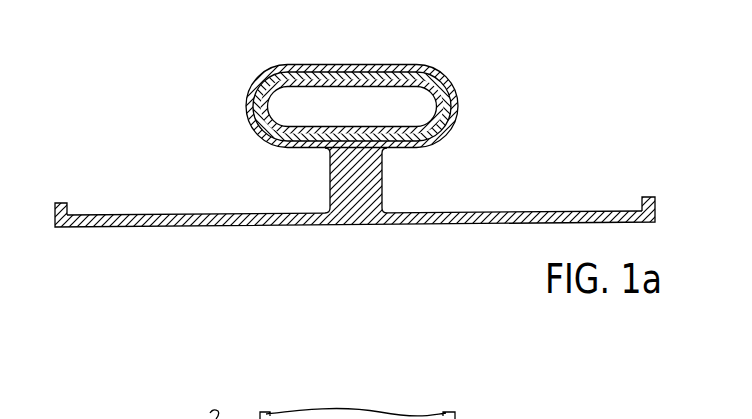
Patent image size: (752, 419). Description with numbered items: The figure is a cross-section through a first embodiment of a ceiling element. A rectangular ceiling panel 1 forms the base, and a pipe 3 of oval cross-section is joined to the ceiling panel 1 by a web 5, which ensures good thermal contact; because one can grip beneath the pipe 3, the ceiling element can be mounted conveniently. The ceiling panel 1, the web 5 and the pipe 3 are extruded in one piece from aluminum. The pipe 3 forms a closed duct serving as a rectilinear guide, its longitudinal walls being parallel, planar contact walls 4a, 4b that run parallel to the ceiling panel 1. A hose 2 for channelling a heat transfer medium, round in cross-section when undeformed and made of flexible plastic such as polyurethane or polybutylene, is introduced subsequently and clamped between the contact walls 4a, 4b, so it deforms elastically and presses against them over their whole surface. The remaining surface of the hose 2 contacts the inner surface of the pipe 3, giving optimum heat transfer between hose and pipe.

The ceiling panel 1 is at (212, 215).
The hose 2 is at (369, 102).
The pipe 3 is at (263, 78).
The contact wall 4a is at (403, 140).
The contact wall 4b is at (338, 72).
The web 5 is at (347, 174).